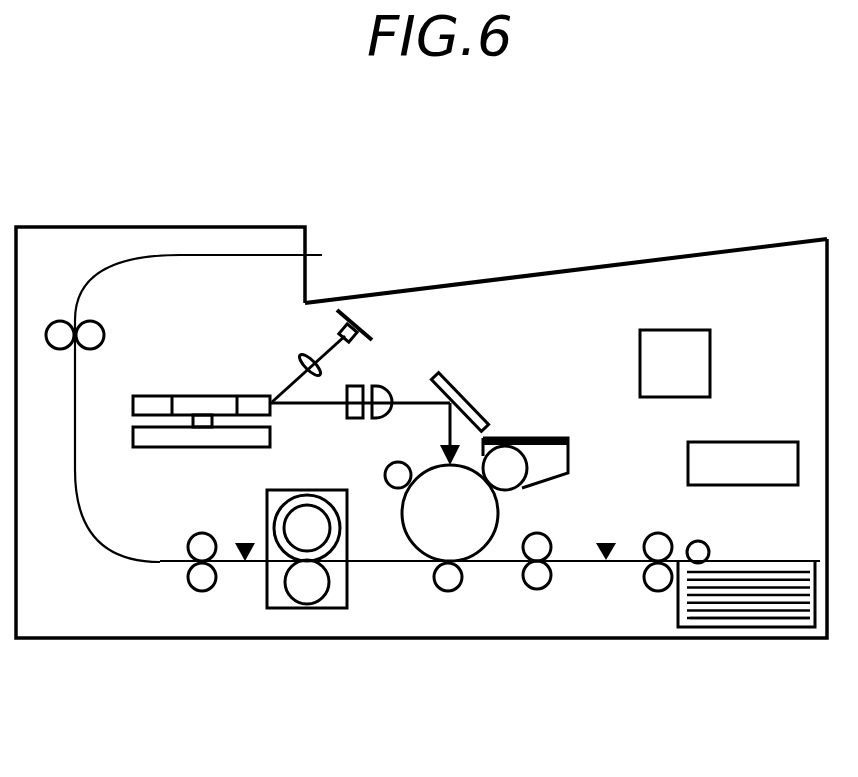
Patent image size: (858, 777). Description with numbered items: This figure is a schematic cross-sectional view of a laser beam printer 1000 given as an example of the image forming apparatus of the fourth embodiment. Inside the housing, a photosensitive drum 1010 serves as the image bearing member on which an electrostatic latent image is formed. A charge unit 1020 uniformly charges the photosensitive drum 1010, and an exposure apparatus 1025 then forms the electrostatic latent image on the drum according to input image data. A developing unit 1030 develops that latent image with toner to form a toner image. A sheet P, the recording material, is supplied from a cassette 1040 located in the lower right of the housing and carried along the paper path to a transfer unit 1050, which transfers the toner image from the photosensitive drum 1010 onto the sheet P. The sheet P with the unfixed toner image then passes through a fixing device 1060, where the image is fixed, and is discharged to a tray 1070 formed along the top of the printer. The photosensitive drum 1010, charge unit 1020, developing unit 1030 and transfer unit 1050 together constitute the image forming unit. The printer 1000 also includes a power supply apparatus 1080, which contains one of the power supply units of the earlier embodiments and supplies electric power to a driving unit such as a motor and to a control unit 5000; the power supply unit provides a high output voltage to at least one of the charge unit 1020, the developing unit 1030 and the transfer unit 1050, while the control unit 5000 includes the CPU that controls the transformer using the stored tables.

The laser beam printer 1000 is at (422, 640).
The tray 1070 is at (435, 284).
The exposure apparatus 1025 is at (202, 397).
The charge unit 1020 is at (386, 466).
The photosensitive drum 1010 is at (406, 557).
The developing unit 1030 is at (572, 448).
The transfer unit 1050 is at (458, 588).
The fixing device 1060 is at (267, 600).
The cassette 1040 is at (800, 548).
The power supply apparatus 1080 is at (737, 442).
The control unit 5000 is at (710, 368).
The sheet P is at (717, 620).